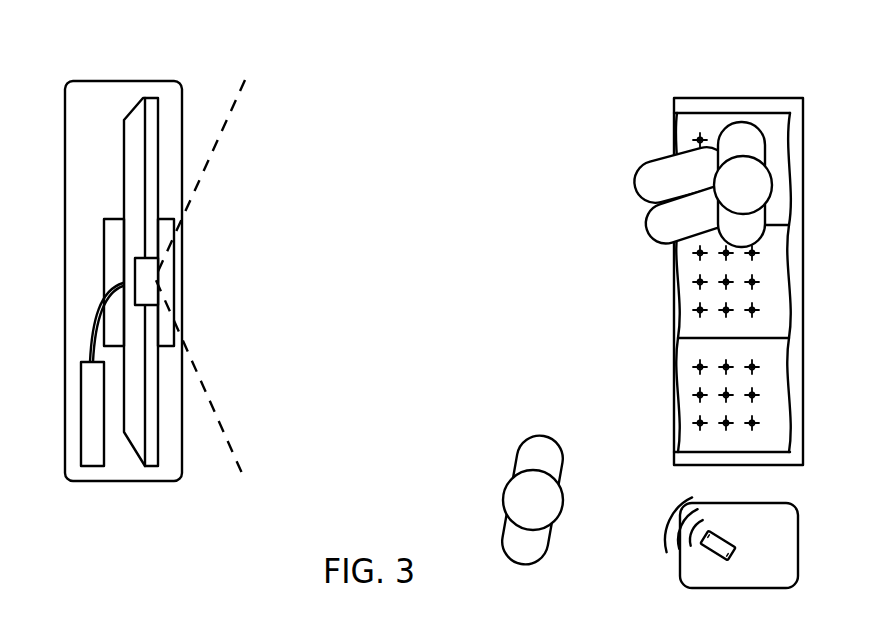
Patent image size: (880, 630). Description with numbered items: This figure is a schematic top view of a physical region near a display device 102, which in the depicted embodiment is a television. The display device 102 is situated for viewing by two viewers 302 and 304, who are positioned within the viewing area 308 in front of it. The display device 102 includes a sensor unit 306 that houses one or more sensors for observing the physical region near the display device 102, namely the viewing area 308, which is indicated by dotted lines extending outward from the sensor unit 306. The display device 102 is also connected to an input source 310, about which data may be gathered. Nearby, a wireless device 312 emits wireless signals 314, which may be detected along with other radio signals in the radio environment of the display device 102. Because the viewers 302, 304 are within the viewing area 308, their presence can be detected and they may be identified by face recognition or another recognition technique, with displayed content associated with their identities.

The display device 102 is at (150, 98).
The viewer 302 is at (510, 497).
The viewer 304 is at (664, 246).
The sensor unit 306 is at (150, 282).
The viewing area 308 is at (228, 122).
The input source 310 is at (93, 466).
The wireless device 312 is at (712, 551).
The wireless signals 314 is at (670, 518).